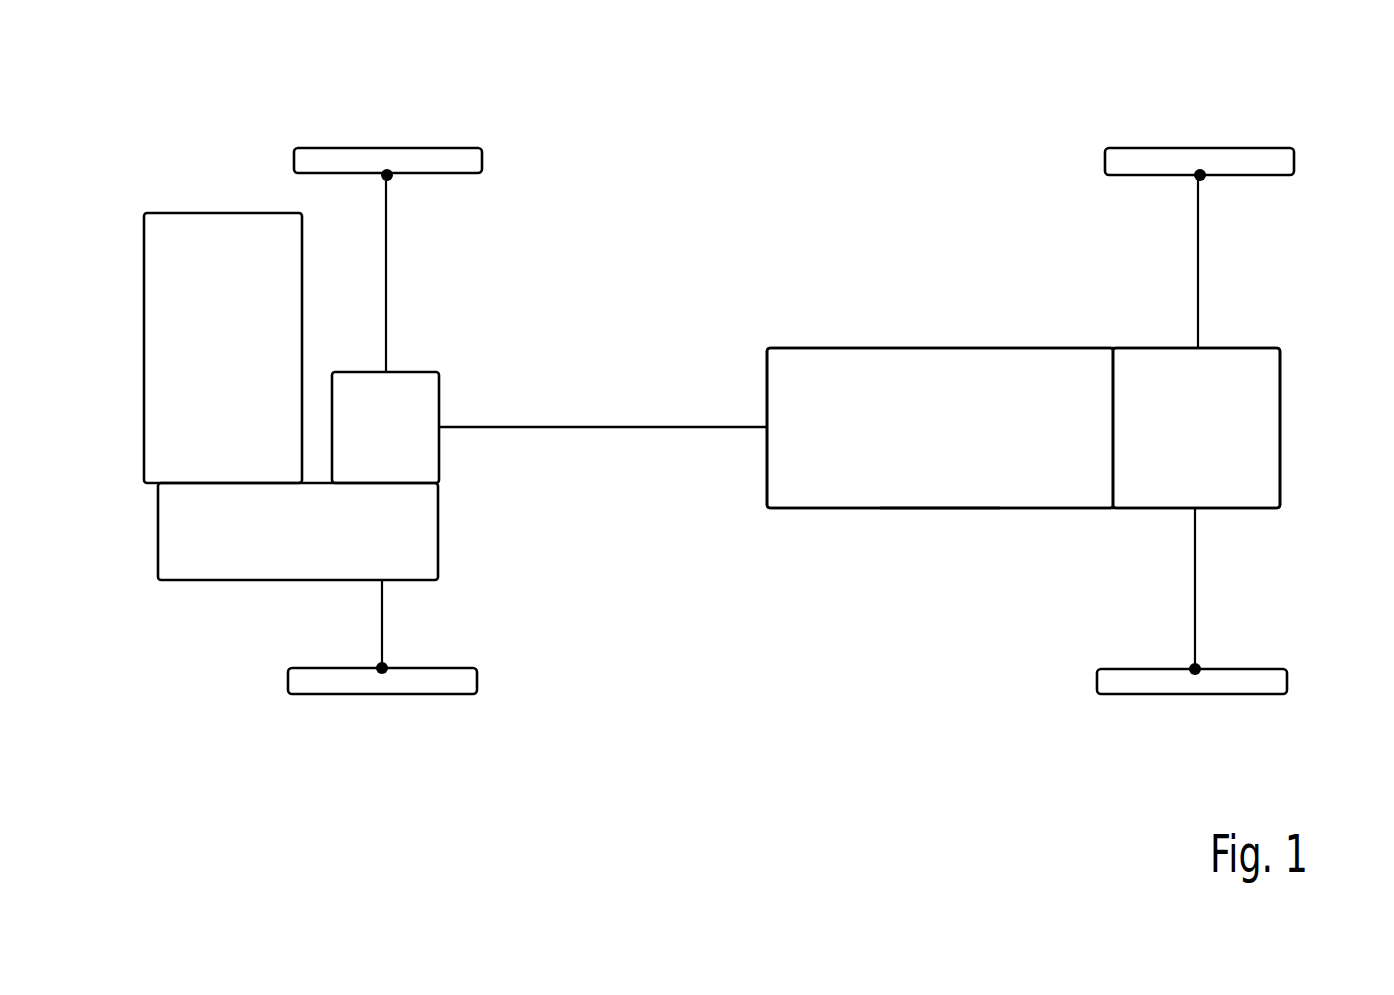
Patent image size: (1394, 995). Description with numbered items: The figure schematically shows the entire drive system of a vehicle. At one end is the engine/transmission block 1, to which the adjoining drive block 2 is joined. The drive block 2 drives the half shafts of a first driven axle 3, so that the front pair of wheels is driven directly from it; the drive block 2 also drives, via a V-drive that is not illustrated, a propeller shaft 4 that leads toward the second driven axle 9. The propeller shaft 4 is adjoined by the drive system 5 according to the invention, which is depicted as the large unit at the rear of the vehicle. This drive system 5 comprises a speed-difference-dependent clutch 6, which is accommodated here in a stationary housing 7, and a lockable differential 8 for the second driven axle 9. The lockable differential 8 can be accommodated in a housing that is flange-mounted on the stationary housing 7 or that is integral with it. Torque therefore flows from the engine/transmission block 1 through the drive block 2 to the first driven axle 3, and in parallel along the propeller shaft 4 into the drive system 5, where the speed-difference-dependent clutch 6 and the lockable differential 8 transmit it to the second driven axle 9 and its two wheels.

The engine/transmission block 1 is at (165, 327).
The drive block 2 is at (409, 424).
The first driven axle 3 is at (385, 268).
The propeller shaft 4 is at (570, 425).
The drive system 5 is at (1046, 335).
The speed-difference-dependent clutch 6 is at (838, 407).
The stationary housing 7 is at (939, 505).
The lockable differential 8 is at (1222, 423).
The second driven axle 9 is at (1198, 264).